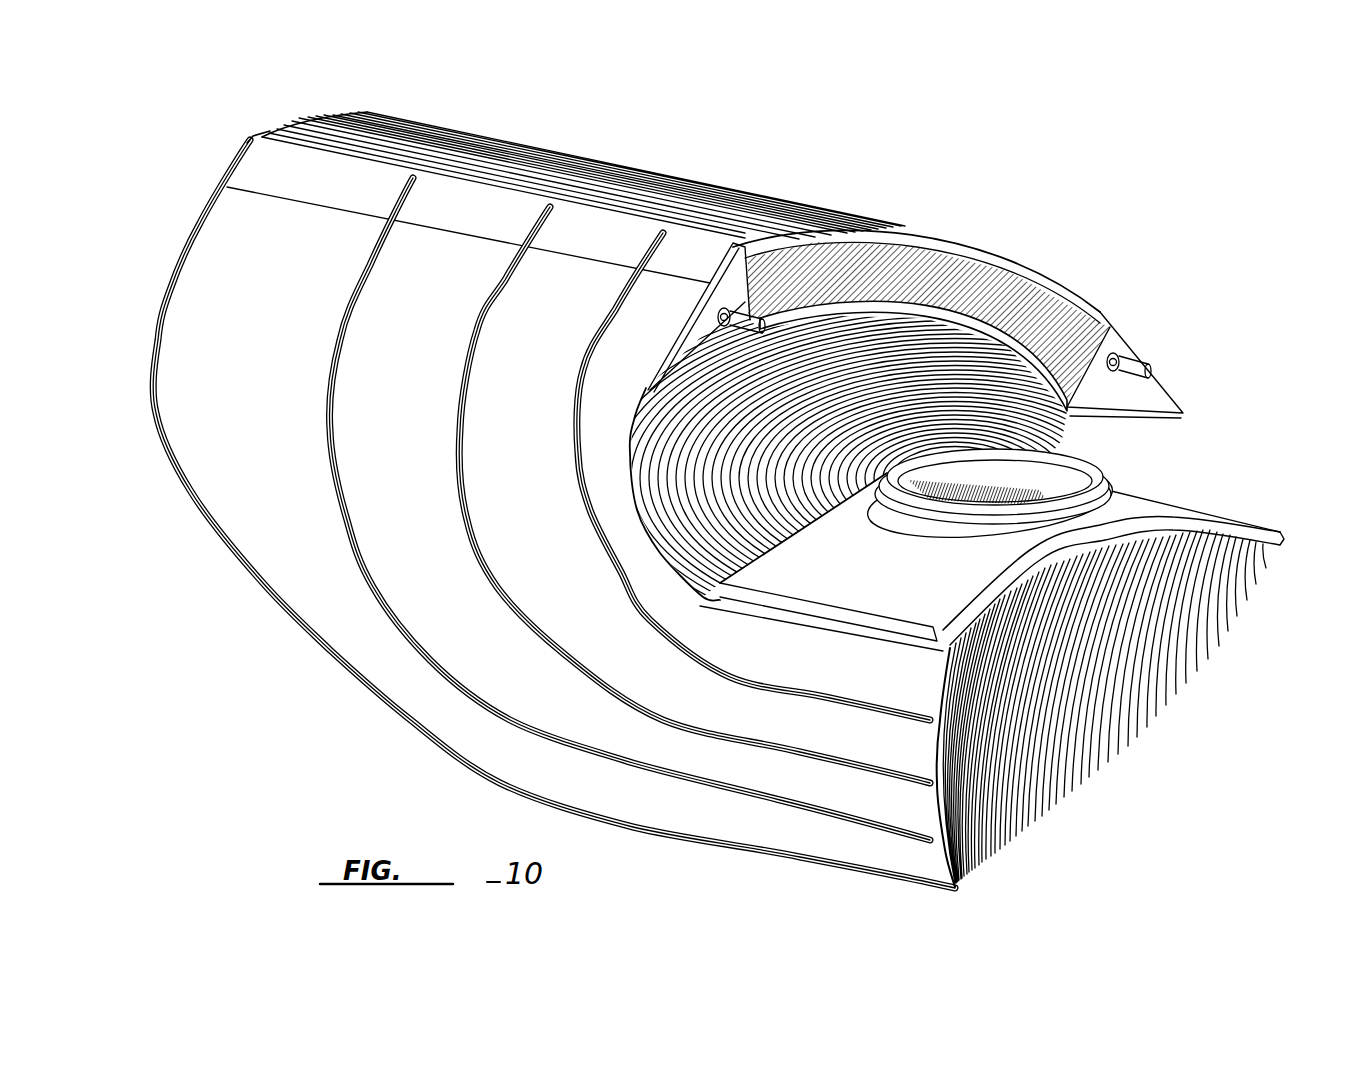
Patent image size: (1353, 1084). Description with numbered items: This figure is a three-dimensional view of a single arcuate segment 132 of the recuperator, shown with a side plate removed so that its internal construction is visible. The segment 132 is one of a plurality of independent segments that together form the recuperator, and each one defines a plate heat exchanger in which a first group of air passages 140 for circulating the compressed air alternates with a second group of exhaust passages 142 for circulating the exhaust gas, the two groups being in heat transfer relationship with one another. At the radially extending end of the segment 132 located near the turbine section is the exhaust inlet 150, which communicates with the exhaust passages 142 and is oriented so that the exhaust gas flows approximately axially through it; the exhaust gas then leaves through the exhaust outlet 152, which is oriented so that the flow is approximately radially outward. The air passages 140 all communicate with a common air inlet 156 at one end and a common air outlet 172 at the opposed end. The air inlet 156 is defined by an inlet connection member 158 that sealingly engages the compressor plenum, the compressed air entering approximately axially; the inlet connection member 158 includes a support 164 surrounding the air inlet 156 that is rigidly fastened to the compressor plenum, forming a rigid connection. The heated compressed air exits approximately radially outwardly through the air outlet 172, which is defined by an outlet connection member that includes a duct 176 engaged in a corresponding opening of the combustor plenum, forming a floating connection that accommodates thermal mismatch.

The arcuate segment 132 is at (160, 242).
The air passages 140 is at (270, 132).
The exhaust passages 142 is at (197, 347).
The exhaust inlet 150 is at (1167, 620).
The exhaust outlet 152 is at (653, 163).
The air inlet 156 is at (987, 261).
The inlet connection member 158 is at (946, 231).
The support 164 is at (1117, 338).
The air outlet 172 is at (1013, 465).
The duct 176 is at (980, 512).